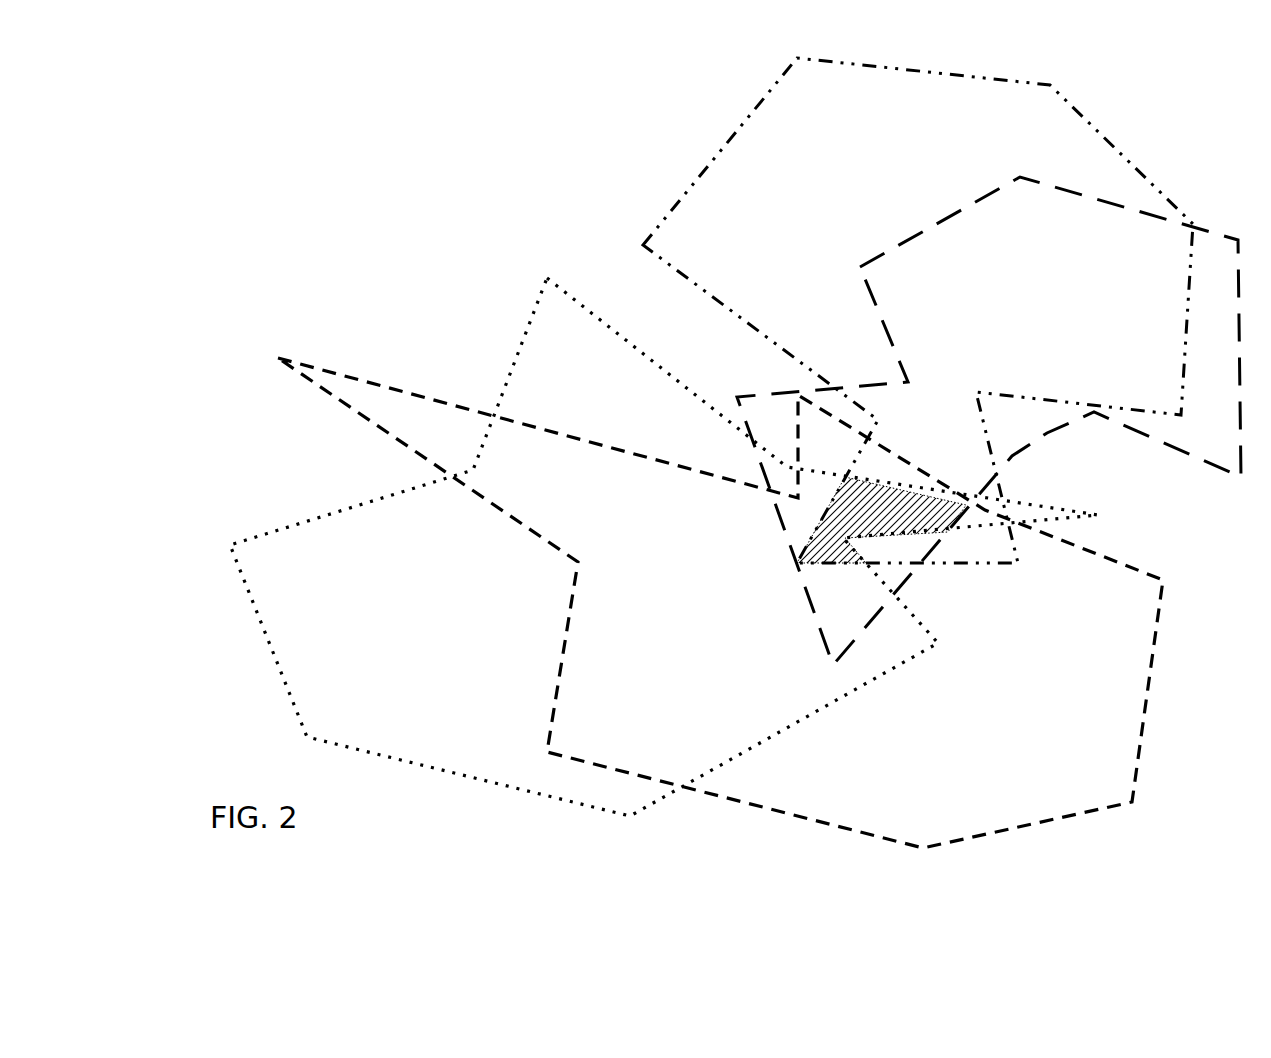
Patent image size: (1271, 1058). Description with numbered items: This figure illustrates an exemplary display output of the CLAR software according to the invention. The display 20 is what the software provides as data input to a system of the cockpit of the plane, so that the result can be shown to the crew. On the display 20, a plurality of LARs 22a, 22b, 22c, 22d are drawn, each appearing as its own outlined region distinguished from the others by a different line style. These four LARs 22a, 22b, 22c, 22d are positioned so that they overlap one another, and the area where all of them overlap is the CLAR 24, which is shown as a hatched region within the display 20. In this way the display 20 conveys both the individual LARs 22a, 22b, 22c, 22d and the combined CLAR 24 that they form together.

The display 20 is at (318, 190).
The LAR 22a is at (705, 168).
The LAR 22b is at (1216, 475).
The LAR 22c is at (530, 322).
The LAR 22d is at (325, 390).
The CLAR 24 is at (915, 518).